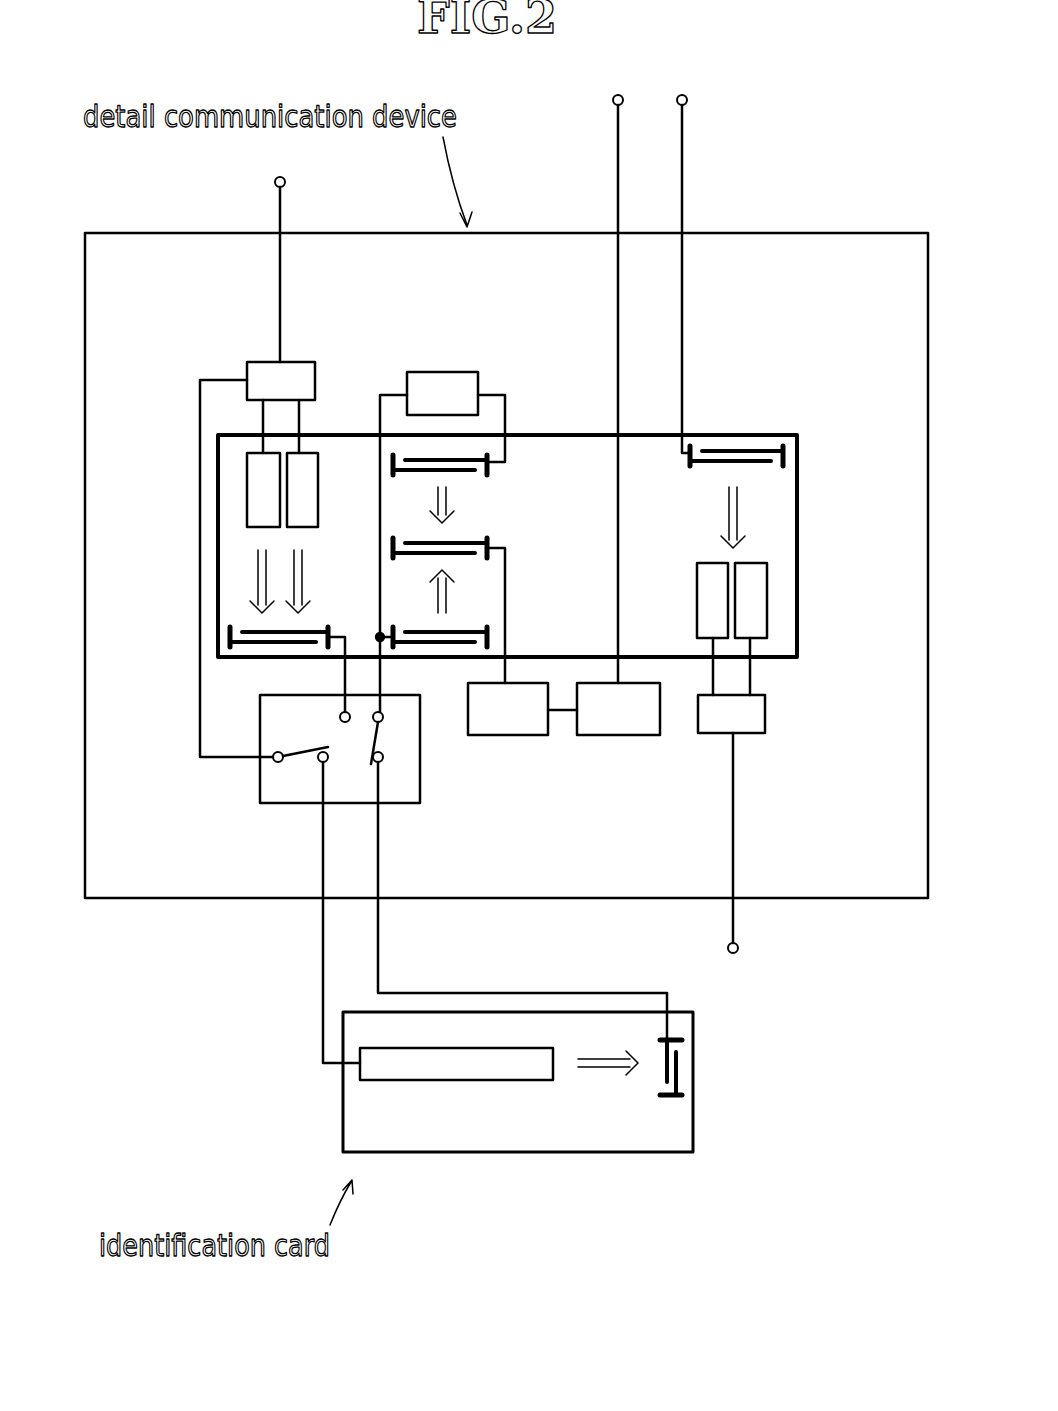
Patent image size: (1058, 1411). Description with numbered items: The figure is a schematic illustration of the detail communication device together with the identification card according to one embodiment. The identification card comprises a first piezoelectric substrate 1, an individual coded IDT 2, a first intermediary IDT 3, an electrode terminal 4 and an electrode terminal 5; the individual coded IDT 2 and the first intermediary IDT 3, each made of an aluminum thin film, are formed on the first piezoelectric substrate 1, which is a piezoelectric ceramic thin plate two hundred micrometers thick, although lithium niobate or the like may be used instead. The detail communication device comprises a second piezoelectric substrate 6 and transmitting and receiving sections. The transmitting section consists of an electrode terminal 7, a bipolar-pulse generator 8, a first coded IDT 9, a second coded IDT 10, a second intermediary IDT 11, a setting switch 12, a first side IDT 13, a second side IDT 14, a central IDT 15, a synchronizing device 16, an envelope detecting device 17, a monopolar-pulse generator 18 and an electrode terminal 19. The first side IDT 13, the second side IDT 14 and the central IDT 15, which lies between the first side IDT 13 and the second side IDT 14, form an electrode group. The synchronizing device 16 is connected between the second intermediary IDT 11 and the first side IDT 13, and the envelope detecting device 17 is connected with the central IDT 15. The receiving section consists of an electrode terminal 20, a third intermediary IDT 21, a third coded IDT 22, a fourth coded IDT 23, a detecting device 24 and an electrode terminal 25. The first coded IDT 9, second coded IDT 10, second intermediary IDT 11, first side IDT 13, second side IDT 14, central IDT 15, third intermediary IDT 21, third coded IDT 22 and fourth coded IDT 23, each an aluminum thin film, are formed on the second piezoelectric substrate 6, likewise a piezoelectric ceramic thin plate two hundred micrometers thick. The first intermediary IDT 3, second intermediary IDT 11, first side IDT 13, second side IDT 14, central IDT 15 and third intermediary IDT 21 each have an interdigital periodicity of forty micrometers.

The first piezoelectric substrate 1 is at (355, 1111).
The individual coded IDT 2 is at (423, 1069).
The first intermediary IDT 3 is at (657, 1082).
The electrode terminal 4 is at (339, 907).
The electrode terminal 5 is at (520, 896).
The second piezoelectric substrate 6 is at (787, 635).
The electrode terminal 7 is at (297, 263).
The bipolar-pulse generator 8 is at (265, 372).
The first coded IDT 9 is at (303, 467).
The second coded IDT 10 is at (259, 476).
The second intermediary IDT 11 is at (297, 650).
The setting switch 12 is at (270, 738).
The first side IDT 13 is at (437, 489).
The second side IDT 14 is at (432, 608).
The central IDT 15 is at (456, 592).
The synchronizing device 16 is at (423, 380).
The envelope detecting device 17 is at (483, 727).
The monopolar-pulse generator 18 is at (595, 727).
The electrode terminal 19 is at (593, 382).
The electrode terminal 20 is at (709, 267).
The third intermediary IDT 21 is at (727, 497).
The third coded IDT 22 is at (757, 593).
The fourth coded IDT 23 is at (713, 595).
The detecting device 24 is at (753, 733).
The electrode terminal 25 is at (759, 951).